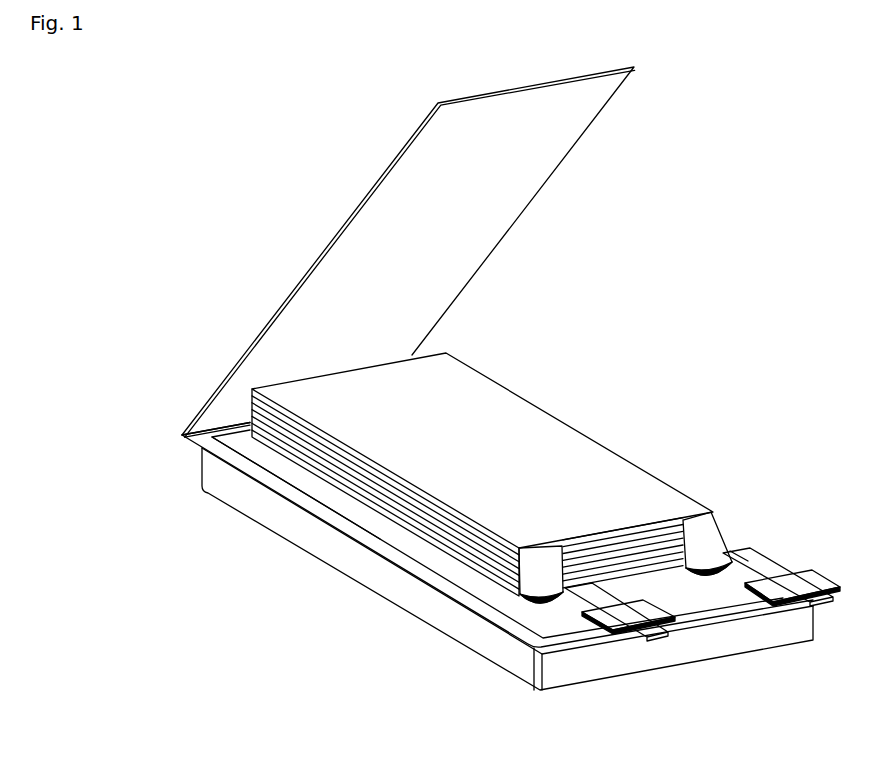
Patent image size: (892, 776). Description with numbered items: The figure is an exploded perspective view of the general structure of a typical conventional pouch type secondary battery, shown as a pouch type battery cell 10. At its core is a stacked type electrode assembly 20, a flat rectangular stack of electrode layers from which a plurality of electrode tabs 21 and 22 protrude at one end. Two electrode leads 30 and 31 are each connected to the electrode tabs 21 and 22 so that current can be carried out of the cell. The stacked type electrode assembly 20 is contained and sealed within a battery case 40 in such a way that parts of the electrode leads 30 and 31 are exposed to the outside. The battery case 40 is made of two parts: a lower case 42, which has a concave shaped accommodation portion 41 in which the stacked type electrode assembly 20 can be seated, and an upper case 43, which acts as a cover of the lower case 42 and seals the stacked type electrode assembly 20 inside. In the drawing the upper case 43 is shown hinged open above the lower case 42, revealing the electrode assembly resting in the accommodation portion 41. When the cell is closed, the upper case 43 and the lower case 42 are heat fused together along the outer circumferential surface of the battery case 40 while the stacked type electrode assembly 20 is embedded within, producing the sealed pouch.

The pouch type battery cell 10 is at (287, 217).
The stacked type electrode assembly 20 is at (611, 462).
The electrode tab 21 is at (542, 572).
The electrode tab 22 is at (717, 543).
The electrode lead 30 is at (630, 627).
The electrode lead 31 is at (817, 598).
The battery case 40 is at (425, 555).
The accommodation portion 41 is at (283, 473).
The lower case 42 is at (203, 452).
The upper case 43 is at (207, 392).